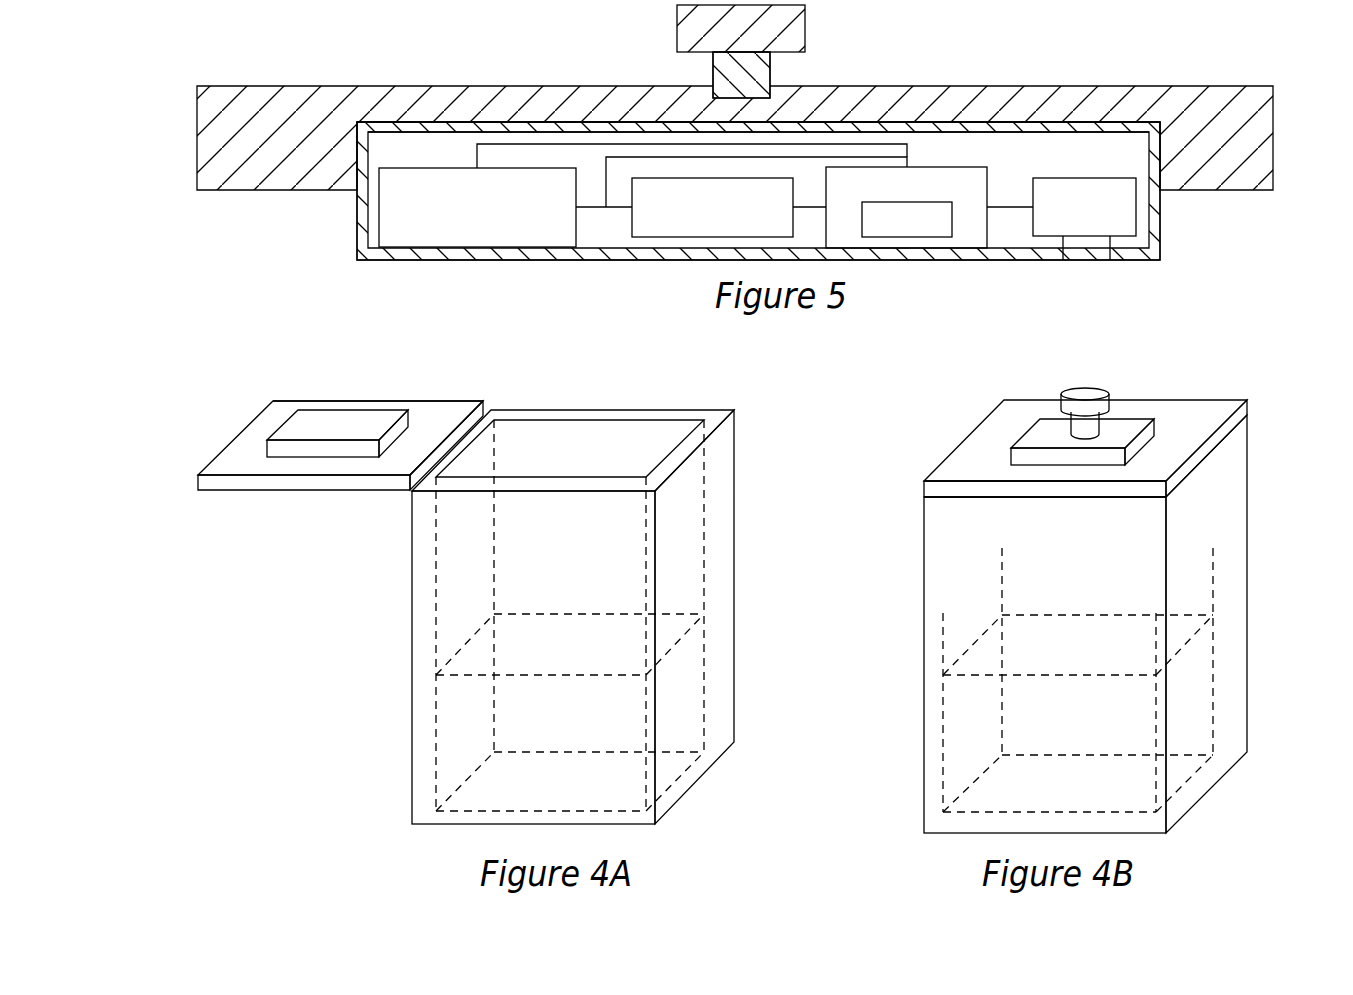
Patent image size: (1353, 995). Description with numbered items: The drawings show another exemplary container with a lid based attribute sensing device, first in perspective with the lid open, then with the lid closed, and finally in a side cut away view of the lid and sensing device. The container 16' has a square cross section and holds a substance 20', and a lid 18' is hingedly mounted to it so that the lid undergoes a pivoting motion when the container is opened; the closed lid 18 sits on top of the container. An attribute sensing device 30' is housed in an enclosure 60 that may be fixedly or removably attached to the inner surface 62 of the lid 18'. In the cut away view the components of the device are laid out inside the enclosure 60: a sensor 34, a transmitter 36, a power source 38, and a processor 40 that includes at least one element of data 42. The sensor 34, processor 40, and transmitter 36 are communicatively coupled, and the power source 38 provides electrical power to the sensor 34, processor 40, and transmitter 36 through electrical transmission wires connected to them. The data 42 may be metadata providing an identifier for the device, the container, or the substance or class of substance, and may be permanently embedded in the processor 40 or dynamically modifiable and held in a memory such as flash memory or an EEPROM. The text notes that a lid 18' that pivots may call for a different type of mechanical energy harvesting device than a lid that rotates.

In FIG. 4B, the lid 18 is at (1085, 415).
In FIG. 5, the lid 18' is at (775, 130).
In FIG. 4A, the lid 18' is at (316, 472).
In FIG. 4B, the lid 18' is at (1015, 507).
In FIG. 4A, the container 16' is at (534, 617).
In FIG. 4B, the container 16' is at (1046, 624).
In FIG. 4A, the substance 20' is at (614, 615).
In FIG. 4B, the substance 20' is at (1123, 680).
In FIG. 5, the attribute sensing device 30' is at (703, 191).
In FIG. 5, the sensor 34 is at (1098, 178).
In FIG. 5, the transmitter 36 is at (658, 178).
In FIG. 5, the power source 38 is at (435, 167).
In FIG. 5, the processor 40 is at (958, 167).
In FIG. 5, the data 42 is at (940, 237).
In FIG. 5, the enclosure 60 is at (1160, 238).
In FIG. 4A, the enclosure 60 is at (333, 420).
In FIG. 4B, the enclosure 60 is at (1038, 432).
In FIG. 5, the inner surface 62 is at (1040, 122).
In FIG. 4A, the inner surface 62 is at (437, 413).